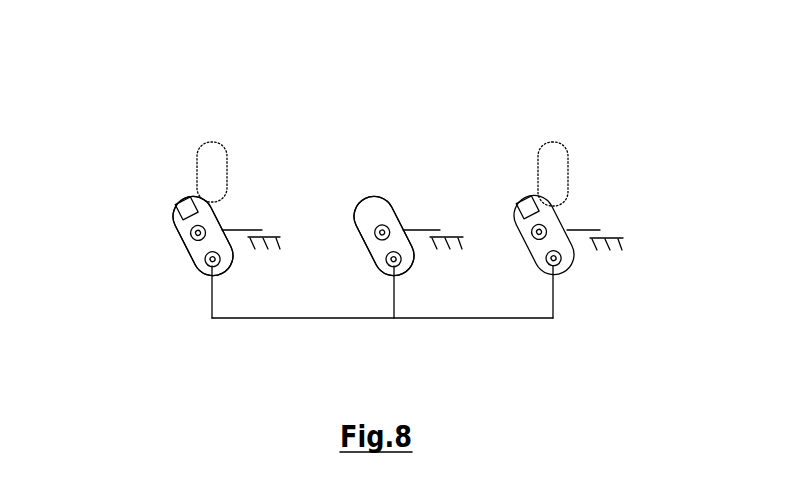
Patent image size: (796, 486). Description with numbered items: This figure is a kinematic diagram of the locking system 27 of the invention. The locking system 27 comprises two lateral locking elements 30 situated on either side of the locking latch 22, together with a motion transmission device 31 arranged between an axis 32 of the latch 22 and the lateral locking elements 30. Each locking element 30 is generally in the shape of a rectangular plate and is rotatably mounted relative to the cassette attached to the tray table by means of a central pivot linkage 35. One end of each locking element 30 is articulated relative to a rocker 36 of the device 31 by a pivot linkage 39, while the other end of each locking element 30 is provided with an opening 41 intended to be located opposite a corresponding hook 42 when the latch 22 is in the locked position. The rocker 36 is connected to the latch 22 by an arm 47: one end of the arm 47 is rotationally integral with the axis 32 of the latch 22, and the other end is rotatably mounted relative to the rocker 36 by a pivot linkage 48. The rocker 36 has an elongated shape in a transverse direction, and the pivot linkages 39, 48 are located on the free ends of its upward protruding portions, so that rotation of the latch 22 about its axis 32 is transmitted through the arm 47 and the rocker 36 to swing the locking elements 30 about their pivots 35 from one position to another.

The locking latch 22 is at (352, 189).
The locking system 27 is at (183, 99).
The lateral locking element 30 is at (172, 218).
The motion transmission device 31 is at (299, 343).
The axis of the latch 32 is at (402, 216).
The central pivot linkage 35 is at (190, 232).
The rocker 36 is at (382, 369).
The pivot linkage 39 is at (203, 260).
The opening 41 is at (186, 202).
The hook 42 is at (213, 157).
The arm 47 is at (384, 240).
The pivot linkage 48 is at (396, 262).